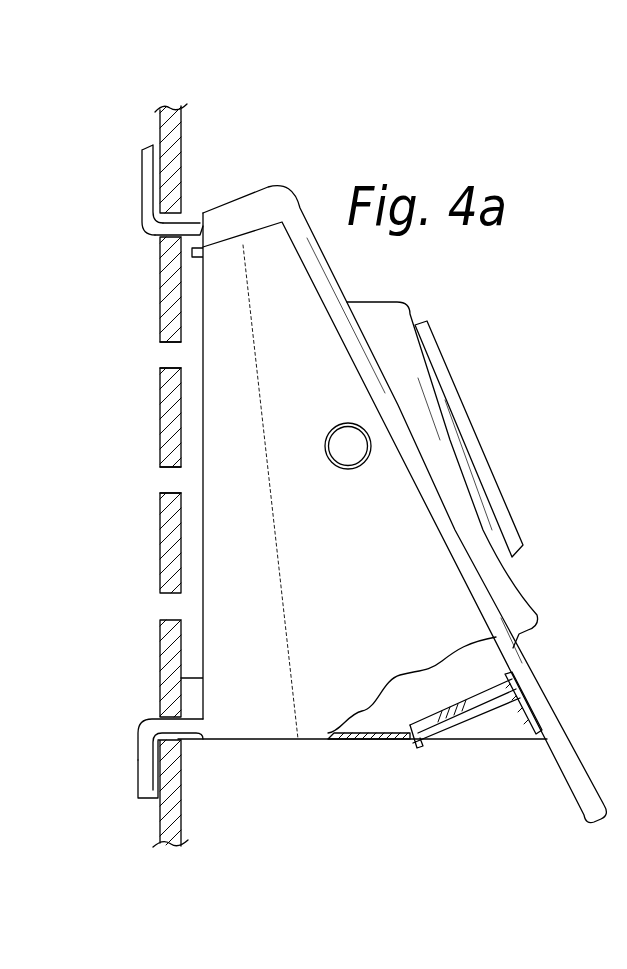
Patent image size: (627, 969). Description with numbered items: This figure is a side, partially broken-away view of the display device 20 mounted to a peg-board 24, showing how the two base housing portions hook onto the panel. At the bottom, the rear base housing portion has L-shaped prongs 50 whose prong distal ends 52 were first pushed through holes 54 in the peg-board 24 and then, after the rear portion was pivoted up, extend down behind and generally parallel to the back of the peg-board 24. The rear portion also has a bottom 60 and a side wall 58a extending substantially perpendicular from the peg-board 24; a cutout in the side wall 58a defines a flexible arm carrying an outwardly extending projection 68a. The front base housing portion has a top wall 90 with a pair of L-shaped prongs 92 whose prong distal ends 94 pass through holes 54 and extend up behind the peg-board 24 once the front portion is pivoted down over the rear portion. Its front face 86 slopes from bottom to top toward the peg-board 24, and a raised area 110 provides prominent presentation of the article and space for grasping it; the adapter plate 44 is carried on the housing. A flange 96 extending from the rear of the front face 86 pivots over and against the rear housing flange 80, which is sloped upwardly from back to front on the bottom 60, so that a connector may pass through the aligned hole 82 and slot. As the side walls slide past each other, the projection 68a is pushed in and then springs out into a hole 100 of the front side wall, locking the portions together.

The peg-board 24 is at (183, 138).
The top wall 90 is at (228, 196).
The prong distal ends 94 is at (147, 199).
The L-shaped prongs 92 is at (148, 237).
The holes 54 is at (163, 480).
The L-shaped prongs 50 is at (153, 719).
The prong distal ends 52 is at (137, 775).
The display device 20 is at (273, 772).
The raised area 110 is at (412, 313).
The adapter plate 44 is at (450, 370).
The holes 100 is at (341, 425).
The outwardly extending projection 68a is at (354, 468).
The side wall 58a is at (354, 599).
The flange 80 is at (427, 690).
The hole 82 is at (477, 693).
The front face 86 is at (536, 662).
The flange 96 is at (468, 720).
The bottom 60 is at (363, 740).